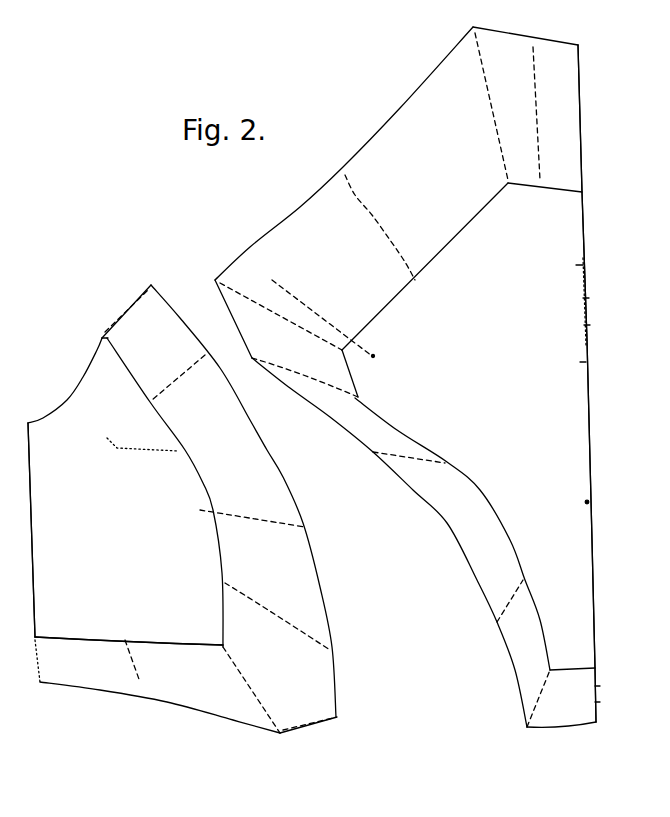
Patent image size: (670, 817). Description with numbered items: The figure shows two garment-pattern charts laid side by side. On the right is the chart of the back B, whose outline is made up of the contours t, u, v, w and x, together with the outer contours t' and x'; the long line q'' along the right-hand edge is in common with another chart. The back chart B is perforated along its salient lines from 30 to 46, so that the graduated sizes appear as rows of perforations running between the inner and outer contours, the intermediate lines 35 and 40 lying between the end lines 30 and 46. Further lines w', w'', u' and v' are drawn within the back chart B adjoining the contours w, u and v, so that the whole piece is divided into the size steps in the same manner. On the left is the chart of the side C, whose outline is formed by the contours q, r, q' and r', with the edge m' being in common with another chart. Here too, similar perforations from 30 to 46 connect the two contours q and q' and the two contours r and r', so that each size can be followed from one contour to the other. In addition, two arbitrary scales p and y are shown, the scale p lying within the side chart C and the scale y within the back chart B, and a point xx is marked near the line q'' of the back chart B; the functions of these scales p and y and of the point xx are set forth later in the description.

The salient line 30 is at (323, 455).
The size 35 grading point 35 is at (365, 411).
The size 40 grading point 40 is at (333, 415).
The salient line 46 is at (377, 378).
The chart of the back B is at (405, 374).
The chart of the side C is at (125, 465).
The contour w is at (305, 303).
The shoulder grading line w' is at (489, 106).
The shoulder grading line w'' is at (527, 112).
The contour u is at (290, 334).
The neck line u' is at (234, 319).
The contour v is at (425, 266).
The side grading line v' is at (380, 220).
The contour t is at (452, 534).
The contour t' is at (389, 542).
The contour q is at (165, 492).
The contour q' is at (243, 501).
The contour q'' is at (595, 383).
The contour r is at (129, 633).
The contour r' is at (186, 686).
The arbitrary scale p is at (142, 453).
The contour x is at (572, 661).
The contour x' is at (561, 716).
The point x x xx is at (574, 498).
The arbitrary scale y is at (323, 319).
The contour m' is at (40, 530).